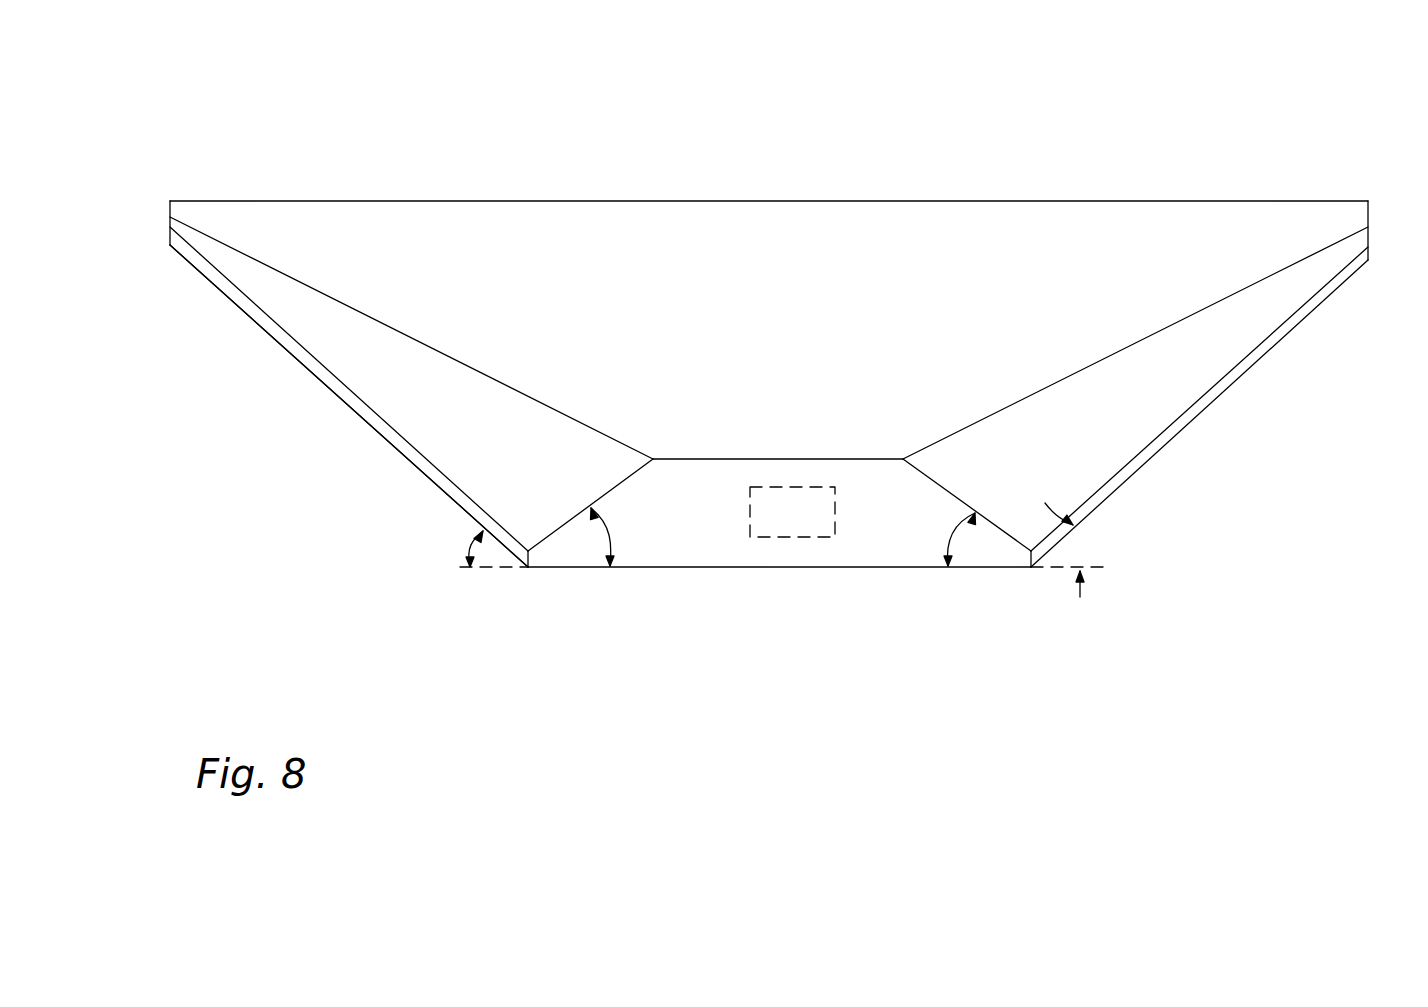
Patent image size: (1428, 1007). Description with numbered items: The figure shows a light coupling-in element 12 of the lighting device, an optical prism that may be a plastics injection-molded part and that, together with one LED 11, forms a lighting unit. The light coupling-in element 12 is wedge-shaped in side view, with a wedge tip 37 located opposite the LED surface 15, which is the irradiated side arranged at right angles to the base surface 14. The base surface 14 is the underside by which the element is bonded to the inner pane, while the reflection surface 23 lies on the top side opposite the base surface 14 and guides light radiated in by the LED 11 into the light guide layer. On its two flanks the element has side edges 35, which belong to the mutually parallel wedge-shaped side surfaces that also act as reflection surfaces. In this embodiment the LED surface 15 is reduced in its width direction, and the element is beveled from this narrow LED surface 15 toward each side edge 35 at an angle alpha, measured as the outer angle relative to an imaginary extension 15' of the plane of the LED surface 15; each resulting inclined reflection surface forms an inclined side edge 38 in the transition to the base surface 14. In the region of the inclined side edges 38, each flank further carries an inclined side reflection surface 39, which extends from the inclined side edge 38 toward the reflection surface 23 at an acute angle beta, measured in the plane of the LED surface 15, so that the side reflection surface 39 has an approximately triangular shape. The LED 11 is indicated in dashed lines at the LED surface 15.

The LED 11 is at (800, 512).
The light coupling-in element 12 is at (410, 487).
The base surface 14 is at (571, 569).
The LED surface 15 is at (779, 570).
The imaginary extension of the plane of the LED surface 15' is at (784, 642).
The reflection surface 23 is at (786, 320).
The side edge 35 is at (168, 221).
The wedge tip 37 is at (580, 201).
The inclined side edge 38 is at (342, 395).
The side reflection surface 39 is at (487, 442).